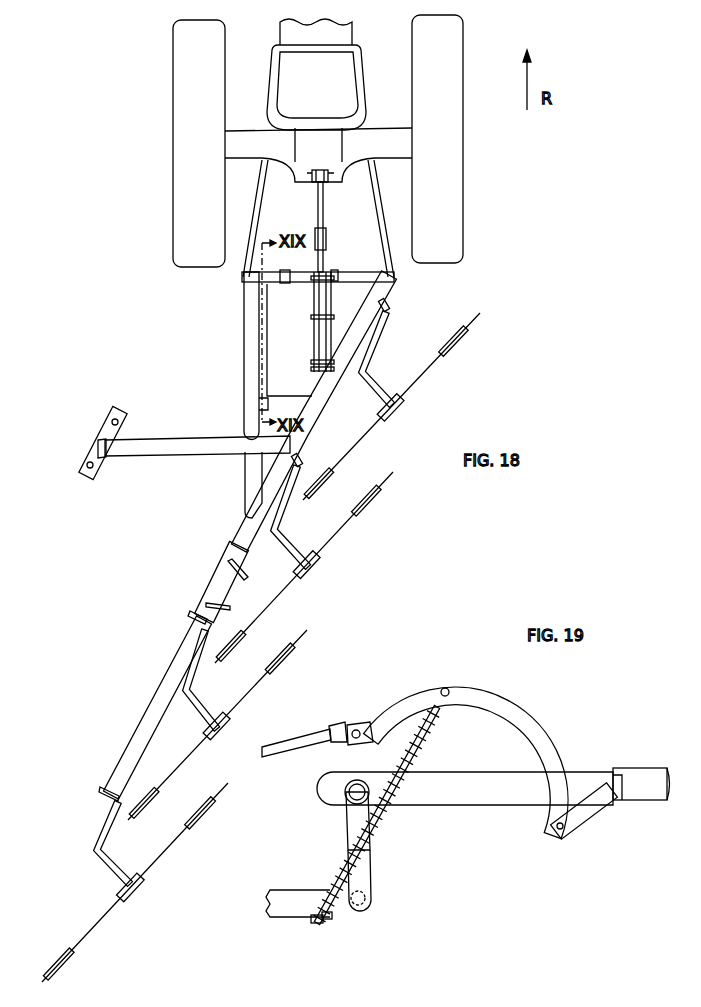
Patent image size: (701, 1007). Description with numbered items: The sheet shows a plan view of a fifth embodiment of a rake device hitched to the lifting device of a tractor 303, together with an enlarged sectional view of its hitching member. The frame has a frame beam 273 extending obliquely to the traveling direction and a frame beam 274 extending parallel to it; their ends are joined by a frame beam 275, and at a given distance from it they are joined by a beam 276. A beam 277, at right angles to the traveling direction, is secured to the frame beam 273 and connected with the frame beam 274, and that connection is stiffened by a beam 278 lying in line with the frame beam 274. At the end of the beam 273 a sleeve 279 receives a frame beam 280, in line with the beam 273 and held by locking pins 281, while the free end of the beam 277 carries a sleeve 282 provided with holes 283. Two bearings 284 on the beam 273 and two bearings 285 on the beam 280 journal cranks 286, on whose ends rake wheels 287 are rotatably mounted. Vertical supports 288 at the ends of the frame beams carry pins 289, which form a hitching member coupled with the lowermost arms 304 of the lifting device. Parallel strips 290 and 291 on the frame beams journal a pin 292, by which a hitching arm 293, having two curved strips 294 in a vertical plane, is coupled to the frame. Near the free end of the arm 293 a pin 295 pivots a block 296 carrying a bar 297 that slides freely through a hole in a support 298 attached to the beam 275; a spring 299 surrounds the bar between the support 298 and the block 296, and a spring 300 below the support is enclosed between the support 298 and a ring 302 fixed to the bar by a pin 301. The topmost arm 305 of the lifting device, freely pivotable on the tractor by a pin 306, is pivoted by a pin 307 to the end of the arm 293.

In FIG. 18, the frame beam 273 is at (320, 412).
In FIG. 19, the frame beam 273 is at (576, 777).
In FIG. 18, the frame beam 274 is at (248, 338).
In FIG. 18, the frame beam 275 is at (285, 270).
In FIG. 19, the frame beam 275 is at (350, 786).
In FIG. 18, the beam 276 is at (262, 404).
In FIG. 19, the beam 276 is at (627, 773).
In FIG. 18, the beam 277 is at (202, 442).
In FIG. 18, the beam 278 is at (251, 473).
In FIG. 18, the sleeve 279 is at (220, 578).
In FIG. 18, the frame beam 280 is at (158, 697).
In FIG. 18, the locking pins 281 is at (245, 578).
In FIG. 18, the sleeve 282 is at (98, 458).
In FIG. 18, the holes 283 is at (112, 422).
In FIG. 18, the bearings 284 is at (384, 310).
In FIG. 18, the bearings 285 is at (193, 617).
In FIG. 18, the cranks 286 is at (366, 376).
In FIG. 18, the rake wheels 287 is at (448, 352).
In FIG. 19, the vertical supports 288 is at (367, 873).
In FIG. 19, the pins 289 is at (366, 898).
In FIG. 18, the strip 290 is at (330, 350).
In FIG. 18, the strip 291 is at (312, 376).
In FIG. 19, the strip 291 is at (582, 815).
In FIG. 18, the pin 292 is at (310, 361).
In FIG. 19, the pin 292 is at (556, 827).
In FIG. 19, the arm 293 is at (457, 744).
In FIG. 18, the curved strips 294 is at (312, 338).
In FIG. 19, the curved strips 294 is at (517, 720).
In FIG. 19, the pin 295 is at (446, 688).
In FIG. 19, the block 296 is at (445, 708).
In FIG. 18, the bar 297 is at (317, 292).
In FIG. 19, the bar 297 is at (398, 759).
In FIG. 19, the support 298 is at (352, 817).
In FIG. 19, the spring 299 is at (382, 823).
In FIG. 19, the spring 300 is at (340, 873).
In FIG. 19, the pin 301 is at (318, 924).
In FIG. 19, the ring 302 is at (331, 919).
In FIG. 18, the tractor 303 is at (513, 156).
In FIG. 18, the lowermost arms 304 is at (258, 218).
In FIG. 19, the lowermost arms 304 is at (283, 895).
In FIG. 18, the topmost arm 305 is at (323, 216).
In FIG. 19, the topmost arm 305 is at (292, 745).
In FIG. 18, the pin 306 is at (322, 170).
In FIG. 18, the pin 307 is at (336, 270).
In FIG. 19, the pin 307 is at (357, 729).